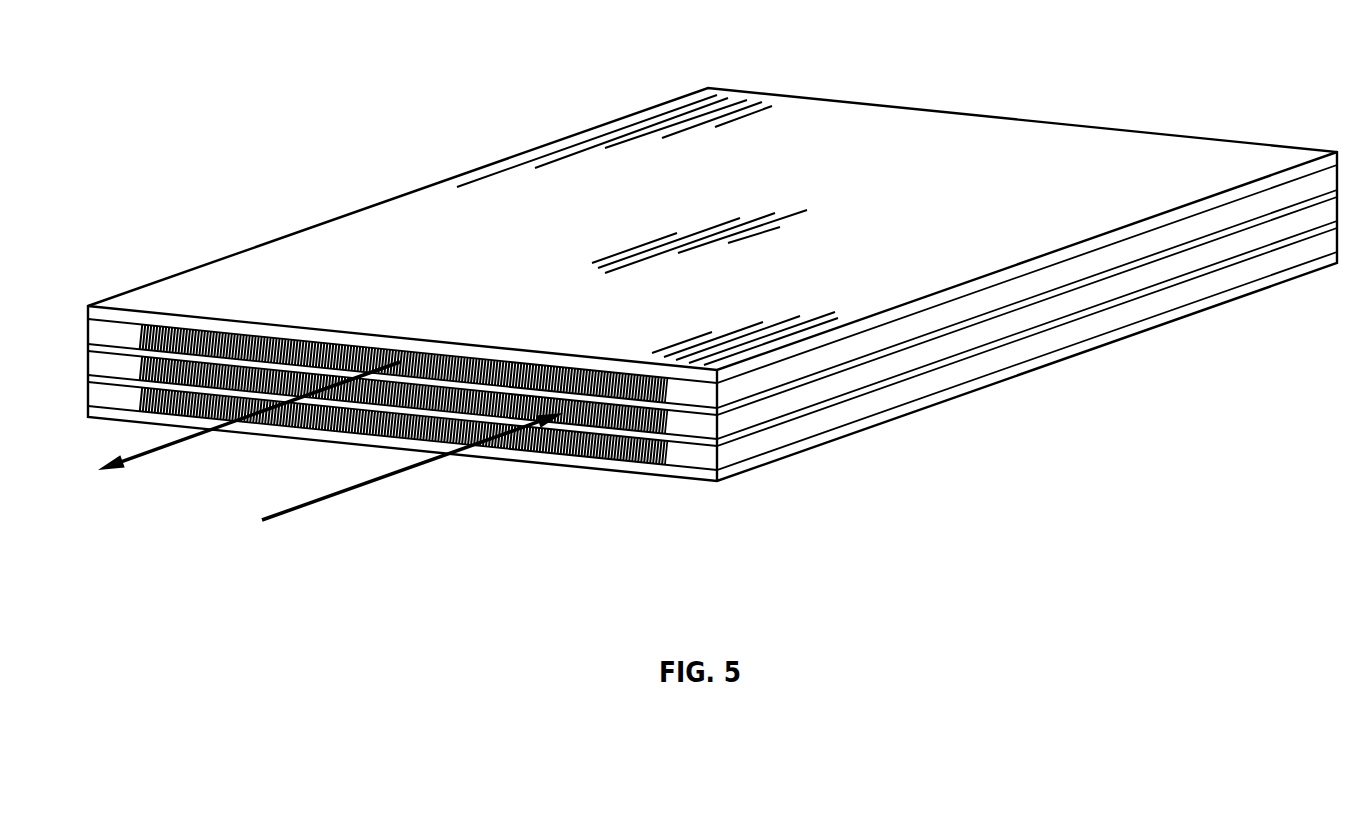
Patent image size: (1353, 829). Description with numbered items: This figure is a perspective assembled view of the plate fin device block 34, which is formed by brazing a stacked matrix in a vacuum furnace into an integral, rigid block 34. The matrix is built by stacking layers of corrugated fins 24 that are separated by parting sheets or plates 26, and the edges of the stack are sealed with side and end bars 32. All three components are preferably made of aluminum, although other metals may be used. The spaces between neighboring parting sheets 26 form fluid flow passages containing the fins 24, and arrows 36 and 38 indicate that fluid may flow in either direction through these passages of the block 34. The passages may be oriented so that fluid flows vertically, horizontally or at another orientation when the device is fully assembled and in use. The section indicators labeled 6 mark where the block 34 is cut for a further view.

The corrugated fins 24 is at (583, 443).
The parting sheets 26 is at (888, 377).
The side and end bars 32 is at (833, 412).
The block 34 is at (146, 81).
The arrow 36 is at (162, 450).
The arrow 38 is at (357, 488).
The section line 6- 6 is at (283, 237).